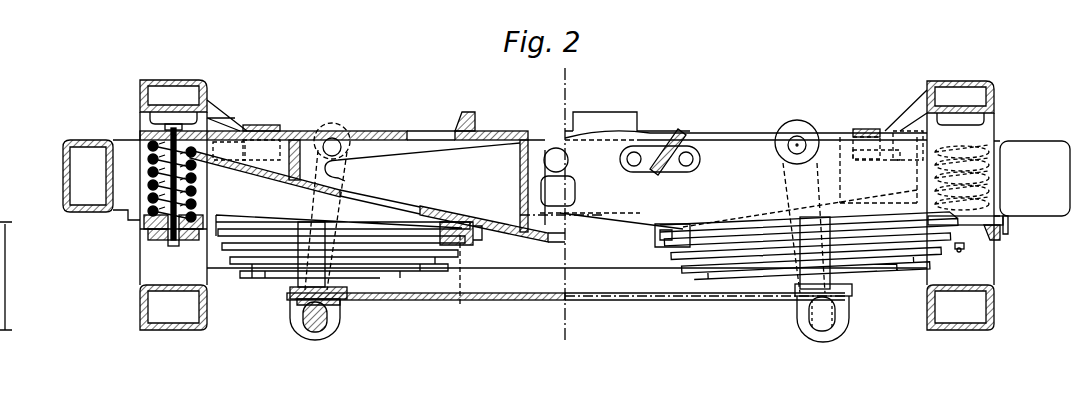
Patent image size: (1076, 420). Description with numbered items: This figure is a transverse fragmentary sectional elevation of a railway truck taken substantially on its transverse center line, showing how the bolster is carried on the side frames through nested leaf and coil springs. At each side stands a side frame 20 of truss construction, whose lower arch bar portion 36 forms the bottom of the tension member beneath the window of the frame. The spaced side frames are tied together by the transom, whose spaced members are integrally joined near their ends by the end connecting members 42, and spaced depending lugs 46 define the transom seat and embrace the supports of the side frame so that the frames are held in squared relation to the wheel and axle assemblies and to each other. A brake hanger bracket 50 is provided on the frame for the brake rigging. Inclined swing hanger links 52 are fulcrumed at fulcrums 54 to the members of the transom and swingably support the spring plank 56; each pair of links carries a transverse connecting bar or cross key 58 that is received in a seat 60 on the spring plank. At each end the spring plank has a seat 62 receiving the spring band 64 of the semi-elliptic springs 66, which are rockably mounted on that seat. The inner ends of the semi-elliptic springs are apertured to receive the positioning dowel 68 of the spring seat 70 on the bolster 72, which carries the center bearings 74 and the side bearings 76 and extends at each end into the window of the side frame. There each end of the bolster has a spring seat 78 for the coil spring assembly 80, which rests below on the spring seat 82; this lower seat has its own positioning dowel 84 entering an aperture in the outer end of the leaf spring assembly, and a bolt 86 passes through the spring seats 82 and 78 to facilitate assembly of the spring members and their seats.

The side frame 20 is at (183, 81).
The lower arch bar portion 36 is at (176, 330).
The end connecting members 42 is at (63, 152).
The depending lugs 46 is at (1006, 222).
The brake hanger bracket 50 is at (262, 131).
The inclined swing hanger links 52 is at (340, 178).
The fulcrum 54 is at (335, 135).
The spring plank 56 is at (687, 288).
The transverse connecting bar or cross key 58 is at (305, 318).
The seat 60 is at (840, 312).
The seat 62 is at (290, 296).
The spring band 64 is at (306, 228).
The semi-elliptic springs 66 is at (396, 260).
The positioning dowel 68 is at (458, 280).
The spring seat 70 is at (455, 233).
The bolster 72 is at (380, 131).
The center bearings 74 is at (510, 131).
The side bearings 76 is at (291, 131).
The spring seat 78 is at (160, 130).
The coil spring assembly 80 is at (145, 165).
The spring seat 82 is at (150, 228).
The positioning dowel 84 is at (160, 238).
The bolt 86 is at (170, 245).